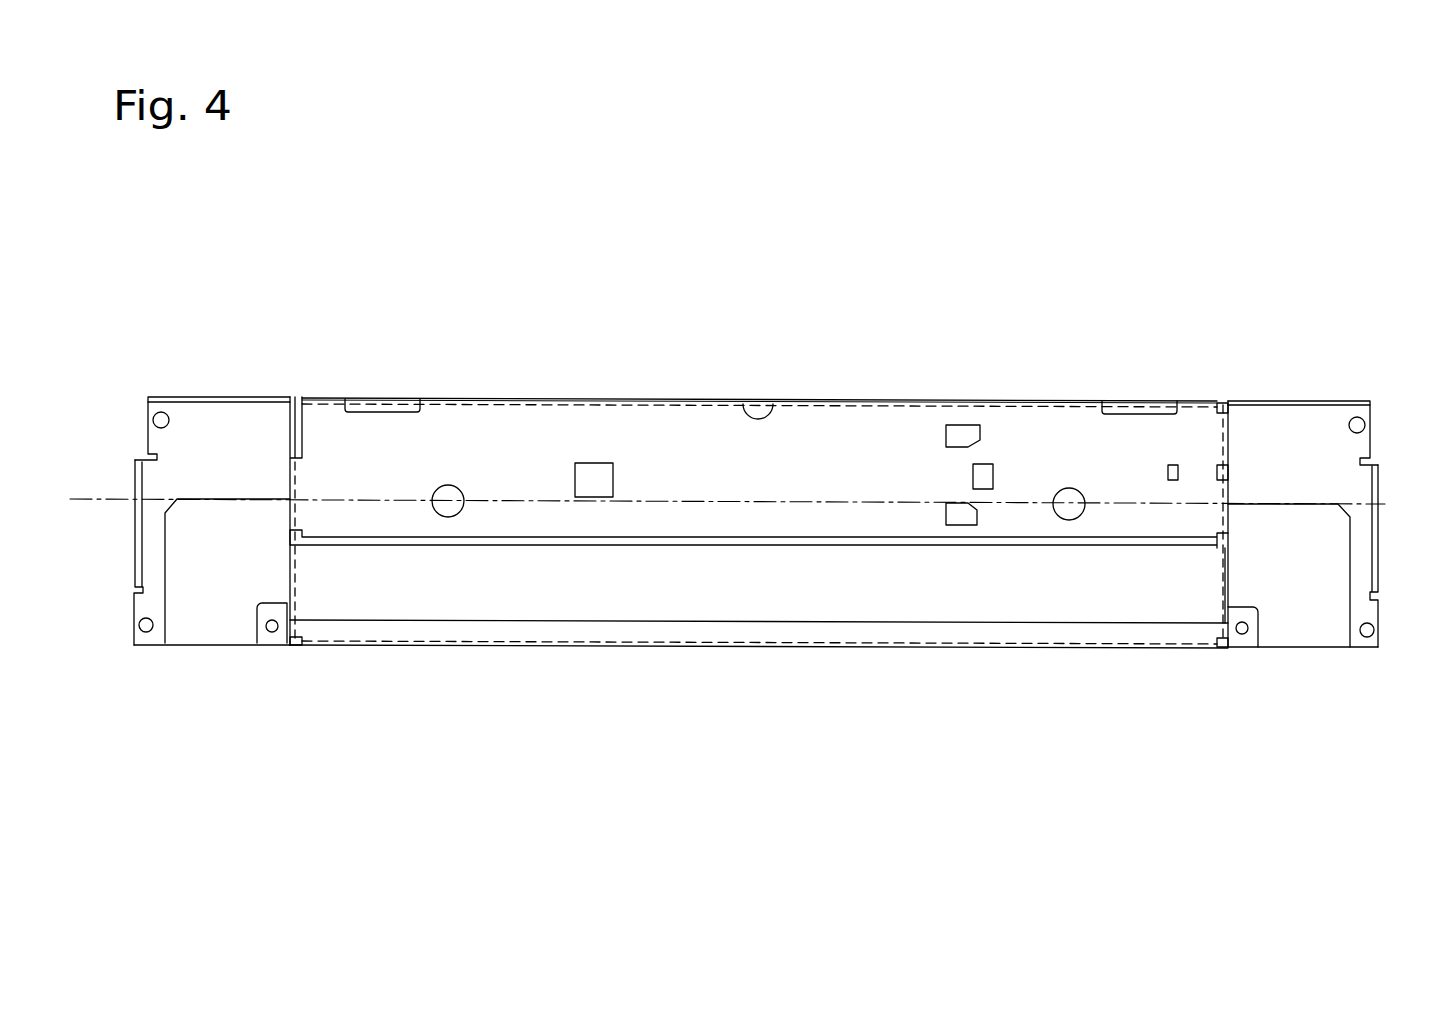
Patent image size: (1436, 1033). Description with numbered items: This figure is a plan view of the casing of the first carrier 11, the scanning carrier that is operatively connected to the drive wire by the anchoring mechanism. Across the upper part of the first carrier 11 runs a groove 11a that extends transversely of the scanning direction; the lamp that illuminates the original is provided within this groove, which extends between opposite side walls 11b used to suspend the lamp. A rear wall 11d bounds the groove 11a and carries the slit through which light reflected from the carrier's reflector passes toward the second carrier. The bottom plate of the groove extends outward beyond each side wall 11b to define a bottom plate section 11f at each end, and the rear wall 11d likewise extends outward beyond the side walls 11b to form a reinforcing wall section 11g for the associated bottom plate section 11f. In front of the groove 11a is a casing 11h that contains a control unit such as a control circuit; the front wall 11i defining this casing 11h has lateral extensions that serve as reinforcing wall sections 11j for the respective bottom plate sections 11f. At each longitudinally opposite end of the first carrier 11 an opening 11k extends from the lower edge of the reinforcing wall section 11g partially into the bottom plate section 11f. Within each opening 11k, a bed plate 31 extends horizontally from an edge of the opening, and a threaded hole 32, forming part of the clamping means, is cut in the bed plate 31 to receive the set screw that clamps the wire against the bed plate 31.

The first carrier 11 is at (638, 388).
The groove 11a is at (478, 600).
The side walls 11b is at (292, 592).
The rear wall 11d is at (777, 648).
The bottom plate section 11f is at (235, 410).
The reinforcing wall section 11g is at (209, 645).
The casing 11h is at (480, 410).
The front wall 11i is at (917, 398).
The reinforcing wall sections 11j is at (180, 398).
The opening 11k is at (185, 608).
The bed plate 31 is at (272, 610).
The threaded hole 32 is at (272, 633).